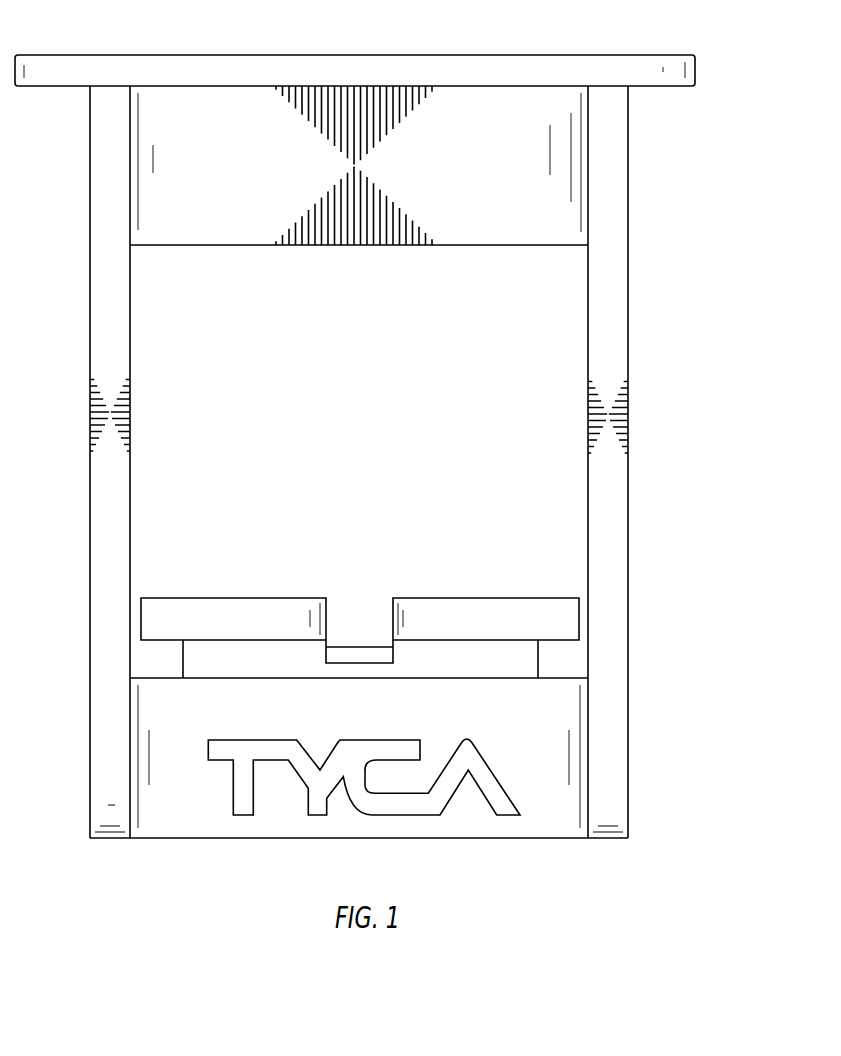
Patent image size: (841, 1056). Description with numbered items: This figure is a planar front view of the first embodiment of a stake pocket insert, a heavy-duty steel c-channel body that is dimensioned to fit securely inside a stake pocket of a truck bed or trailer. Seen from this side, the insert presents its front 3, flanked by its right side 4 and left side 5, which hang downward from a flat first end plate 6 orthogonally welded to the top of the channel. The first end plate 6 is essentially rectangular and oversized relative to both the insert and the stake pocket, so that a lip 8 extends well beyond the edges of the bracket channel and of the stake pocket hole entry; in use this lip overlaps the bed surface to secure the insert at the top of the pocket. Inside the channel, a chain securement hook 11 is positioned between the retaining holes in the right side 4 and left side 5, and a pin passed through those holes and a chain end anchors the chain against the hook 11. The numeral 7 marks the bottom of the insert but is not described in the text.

The front 3 is at (518, 202).
The right side 4 is at (628, 487).
The left side 5 is at (90, 283).
The first end plate 6 is at (328, 55).
The bottom edge 7 is at (402, 845).
The lip 8 is at (688, 55).
The chain securement hook 11 is at (533, 598).